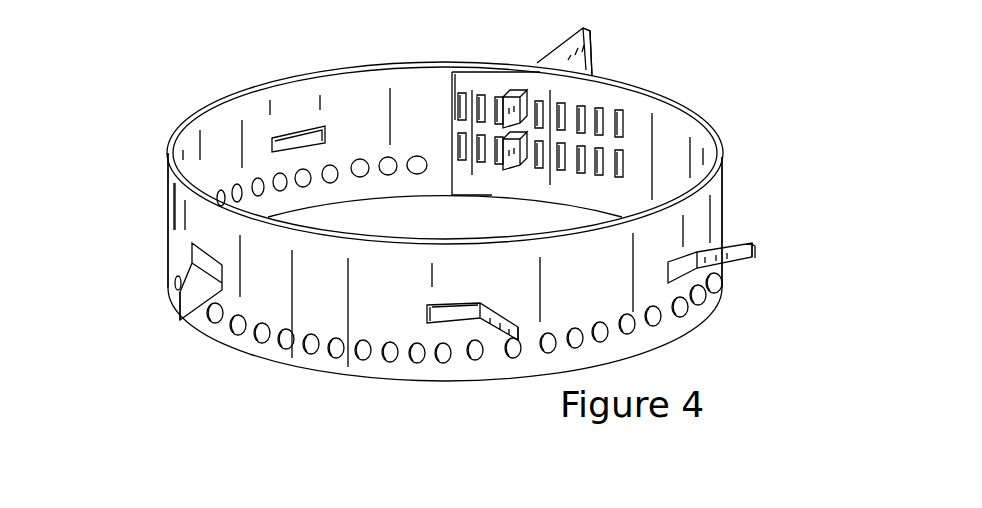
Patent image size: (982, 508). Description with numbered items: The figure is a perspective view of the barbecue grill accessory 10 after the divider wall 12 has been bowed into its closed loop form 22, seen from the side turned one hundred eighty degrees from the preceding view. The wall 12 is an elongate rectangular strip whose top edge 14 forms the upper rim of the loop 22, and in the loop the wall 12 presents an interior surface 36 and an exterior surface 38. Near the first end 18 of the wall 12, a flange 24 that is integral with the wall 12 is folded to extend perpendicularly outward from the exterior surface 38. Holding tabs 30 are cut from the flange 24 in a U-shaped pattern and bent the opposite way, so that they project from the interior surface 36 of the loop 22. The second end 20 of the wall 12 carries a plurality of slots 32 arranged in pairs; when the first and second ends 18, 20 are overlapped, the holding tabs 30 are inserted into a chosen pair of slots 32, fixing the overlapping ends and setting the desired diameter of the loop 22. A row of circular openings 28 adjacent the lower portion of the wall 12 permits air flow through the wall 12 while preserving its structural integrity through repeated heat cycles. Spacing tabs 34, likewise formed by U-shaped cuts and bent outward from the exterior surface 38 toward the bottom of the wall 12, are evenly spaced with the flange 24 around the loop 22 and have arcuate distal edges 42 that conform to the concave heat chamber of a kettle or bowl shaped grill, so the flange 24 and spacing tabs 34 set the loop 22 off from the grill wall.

The barbecue grill accessory 10 is at (127, 91).
The wall 12 is at (643, 84).
The top edge 14 is at (702, 114).
The first end 18 is at (531, 61).
The second end 20 is at (450, 88).
The loop form 22 is at (207, 82).
The flange 24 is at (597, 52).
The circular openings 28 is at (683, 312).
The holding tabs 30 is at (503, 137).
The slots 32 is at (580, 100).
The spacing tabs 34 is at (194, 320).
The interior surface 36 is at (252, 103).
The exterior surface 38 is at (167, 198).
The distal edges 42 is at (173, 318).